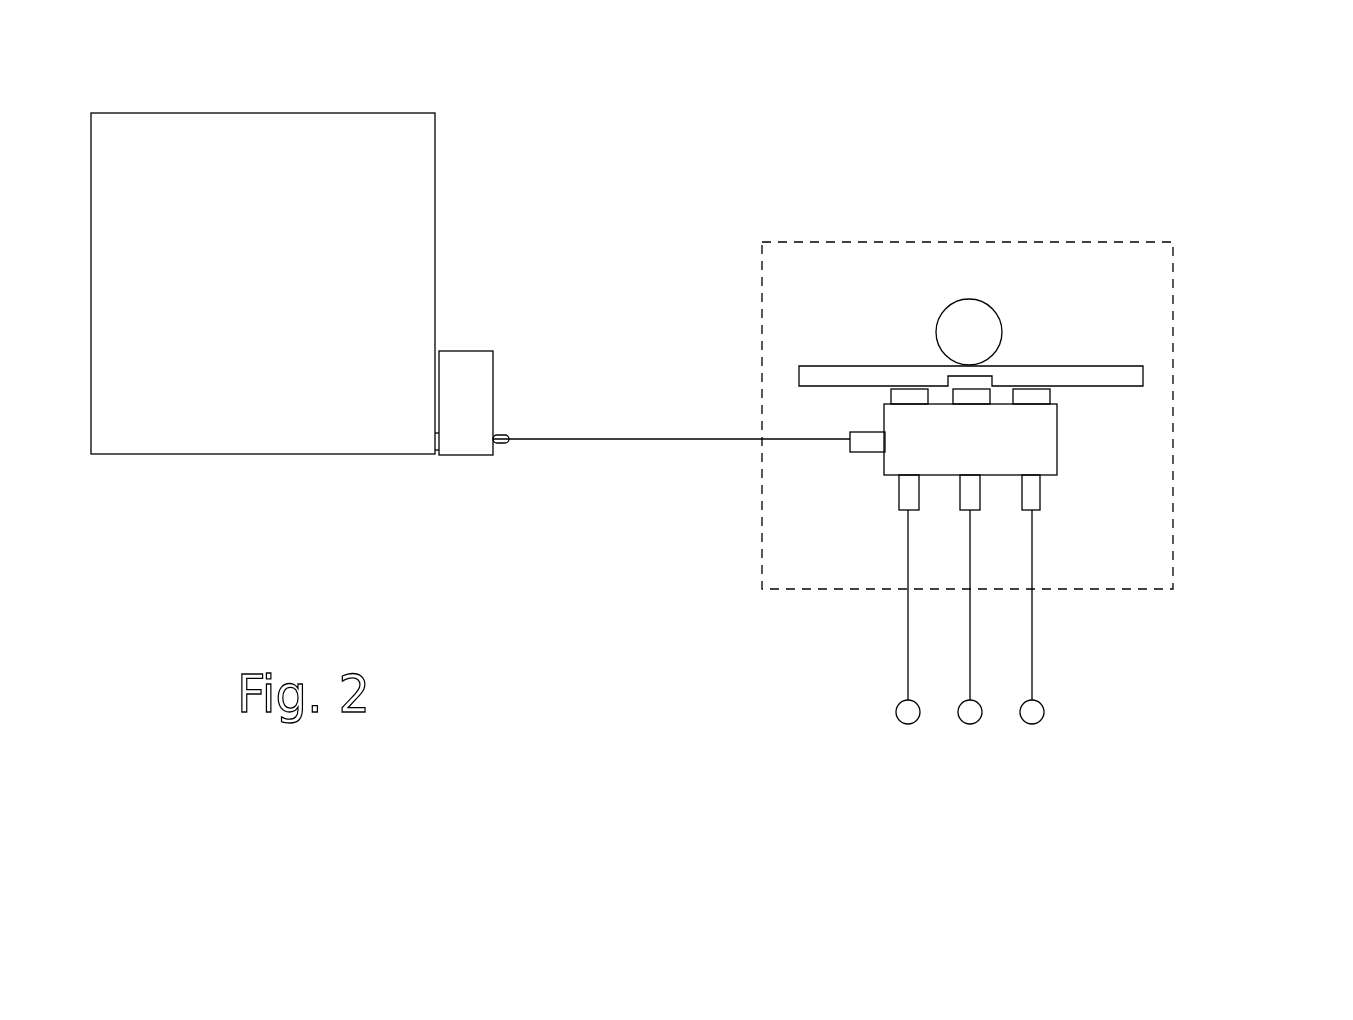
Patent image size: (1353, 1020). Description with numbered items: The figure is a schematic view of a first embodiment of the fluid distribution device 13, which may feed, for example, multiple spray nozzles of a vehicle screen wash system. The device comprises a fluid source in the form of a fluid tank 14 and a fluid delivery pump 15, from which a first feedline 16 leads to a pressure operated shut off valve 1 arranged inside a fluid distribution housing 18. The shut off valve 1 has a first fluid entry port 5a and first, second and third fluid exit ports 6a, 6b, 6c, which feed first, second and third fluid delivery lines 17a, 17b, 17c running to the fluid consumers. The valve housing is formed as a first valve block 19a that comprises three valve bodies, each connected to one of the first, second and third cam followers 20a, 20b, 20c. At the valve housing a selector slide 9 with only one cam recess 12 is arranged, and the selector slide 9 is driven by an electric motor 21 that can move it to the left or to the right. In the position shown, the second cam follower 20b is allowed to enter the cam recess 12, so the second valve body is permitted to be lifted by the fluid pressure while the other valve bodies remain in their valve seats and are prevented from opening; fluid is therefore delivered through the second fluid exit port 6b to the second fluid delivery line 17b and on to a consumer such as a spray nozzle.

The pressure operated shut off valve 1 is at (1070, 364).
The first fluid entry port 5a is at (860, 443).
The first fluid exit port 6a is at (898, 495).
The second fluid exit port 6b is at (973, 495).
The third fluid exit port 6c is at (1032, 490).
The selector slide 9 is at (837, 375).
The cam recess 12 is at (947, 383).
The fluid distribution device 13 is at (762, 203).
The fluid tank 14 is at (243, 298).
The fluid delivery pump 15 is at (469, 365).
The first feedline 16 is at (565, 442).
The first fluid delivery line 17a is at (906, 640).
The second fluid delivery line 17b is at (968, 655).
The third fluid delivery line 17c is at (1036, 652).
The fluid distribution housing 18 is at (1173, 413).
The first valve block 19a is at (1048, 445).
The first cam follower 20a is at (907, 398).
The second cam follower 20b is at (980, 395).
The third cam follower 20c is at (1053, 398).
The electric motor 21 is at (954, 346).